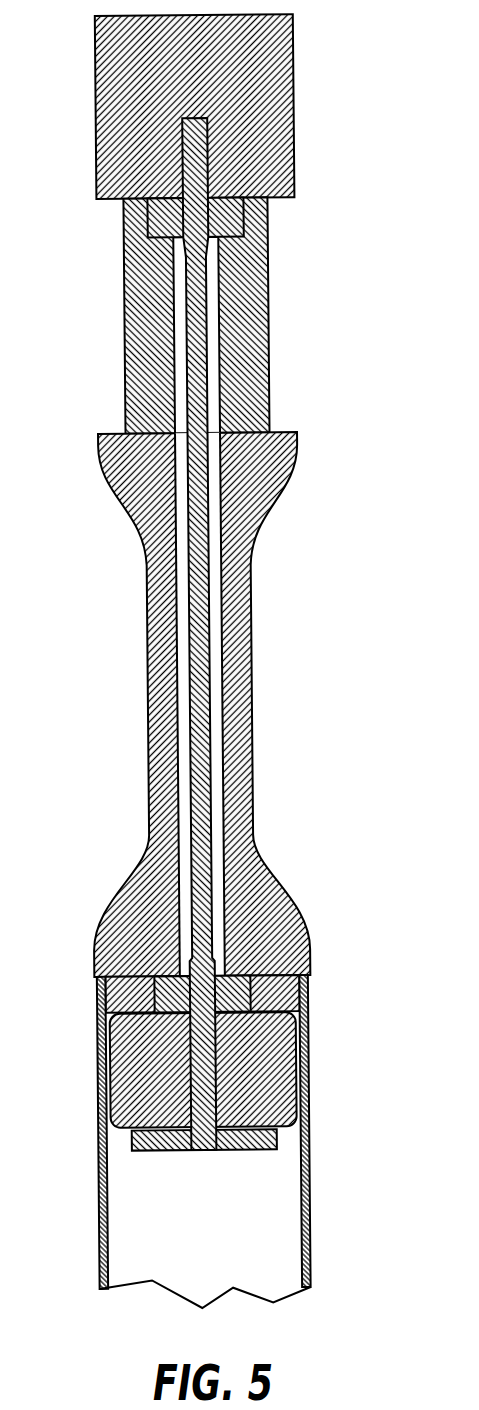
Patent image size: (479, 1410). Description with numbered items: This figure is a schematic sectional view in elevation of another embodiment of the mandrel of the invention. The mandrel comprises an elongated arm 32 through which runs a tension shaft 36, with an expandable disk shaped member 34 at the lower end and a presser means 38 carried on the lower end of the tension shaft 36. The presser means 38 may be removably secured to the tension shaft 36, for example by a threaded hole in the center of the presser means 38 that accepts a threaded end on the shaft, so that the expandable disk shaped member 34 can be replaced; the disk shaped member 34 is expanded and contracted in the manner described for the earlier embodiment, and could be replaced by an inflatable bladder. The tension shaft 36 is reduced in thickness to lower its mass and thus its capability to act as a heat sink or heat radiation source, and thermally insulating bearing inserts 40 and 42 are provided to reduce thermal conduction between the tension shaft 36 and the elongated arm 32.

The elongated arm 32 is at (233, 585).
The expandable disk shaped member 34 is at (287, 1134).
The tension shaft 36 is at (200, 675).
The presser means 38 is at (248, 1150).
The thermally insulating bearing insert 40 is at (162, 976).
The thermally insulating bearing insert 42 is at (176, 238).